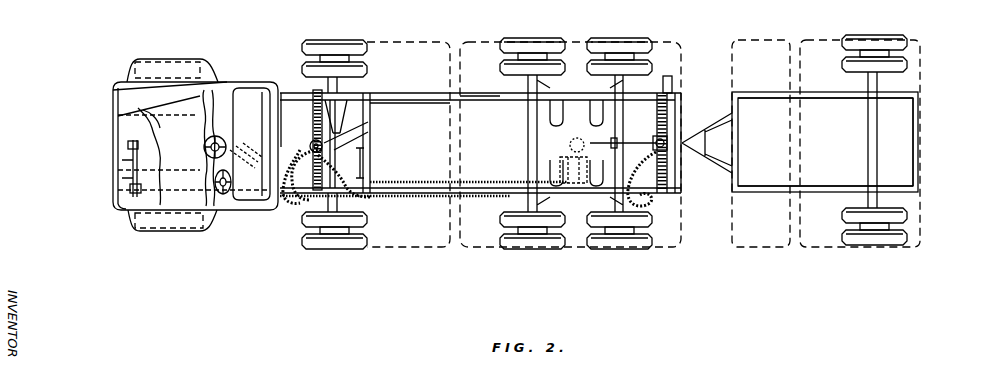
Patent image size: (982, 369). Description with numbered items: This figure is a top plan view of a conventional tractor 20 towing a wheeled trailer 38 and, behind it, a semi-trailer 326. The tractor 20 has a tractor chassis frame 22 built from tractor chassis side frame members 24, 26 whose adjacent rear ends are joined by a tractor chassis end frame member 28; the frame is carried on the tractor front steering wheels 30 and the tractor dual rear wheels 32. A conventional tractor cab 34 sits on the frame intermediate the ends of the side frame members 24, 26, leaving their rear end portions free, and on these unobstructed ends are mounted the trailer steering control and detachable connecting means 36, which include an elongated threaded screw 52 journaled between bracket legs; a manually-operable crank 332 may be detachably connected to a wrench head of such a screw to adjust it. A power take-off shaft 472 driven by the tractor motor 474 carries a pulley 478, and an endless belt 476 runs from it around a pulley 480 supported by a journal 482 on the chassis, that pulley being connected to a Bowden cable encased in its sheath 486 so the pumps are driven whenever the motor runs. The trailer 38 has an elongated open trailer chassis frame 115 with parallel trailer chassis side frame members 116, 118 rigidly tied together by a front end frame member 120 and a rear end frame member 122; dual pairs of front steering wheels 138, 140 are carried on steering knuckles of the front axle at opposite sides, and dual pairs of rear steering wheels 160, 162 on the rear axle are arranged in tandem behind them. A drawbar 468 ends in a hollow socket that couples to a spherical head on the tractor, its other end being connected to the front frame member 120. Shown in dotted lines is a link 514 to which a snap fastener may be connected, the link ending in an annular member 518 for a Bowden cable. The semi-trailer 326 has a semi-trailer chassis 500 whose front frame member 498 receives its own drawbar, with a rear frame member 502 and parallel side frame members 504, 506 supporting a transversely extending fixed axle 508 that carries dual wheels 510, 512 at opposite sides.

The tractor 20 is at (112, 236).
The tractor chassis frame 22 is at (381, 89).
The tractor chassis side frame member 24 is at (293, 91).
The tractor chassis side frame member 26 is at (303, 198).
The tractor chassis end frame member 28 is at (381, 110).
The tractor front steering wheels 30 is at (172, 60).
The tractor dual rear wheels 32 is at (361, 36).
The tractor cab 34 is at (232, 82).
The trailer steering control and detachable connecting means 36 is at (310, 131).
The wheeled trailer 38 is at (477, 40).
The threaded screw 52 is at (312, 108).
The trailer chassis frame 115 is at (474, 93).
The trailer chassis side frame member 116 is at (431, 101).
The trailer chassis side frame member 118 is at (414, 163).
The trailer chassis front end frame member 120 is at (364, 133).
The trailer chassis rear end frame member 122 is at (682, 112).
The front steering wheels 138 is at (541, 38).
The front steering wheels 140 is at (548, 252).
The rear steering wheels 160 is at (628, 37).
The rear steering wheels 162 is at (647, 249).
The semi-trailer 326 is at (943, 60).
The manually-operable crank 332 is at (670, 78).
The drawbar 468 is at (322, 143).
The power take-off shaft 472 is at (136, 145).
The tractor motor 474 is at (150, 115).
The endless belt 476 is at (122, 178).
The pulley 478 is at (128, 145).
The pulley 480 is at (130, 189).
The journal 482 is at (122, 208).
The sheath 486 is at (240, 206).
The front frame member 498 is at (738, 151).
The semi-trailer chassis 500 is at (923, 138).
The rear frame member 502 is at (918, 119).
The side frame member 504 is at (829, 99).
The side frame member 506 is at (818, 194).
The fixed axle 508 is at (869, 156).
The dual wheels 510 is at (883, 252).
The dual wheels 512 is at (906, 33).
The link 514 is at (361, 170).
The annular member 518 is at (363, 152).